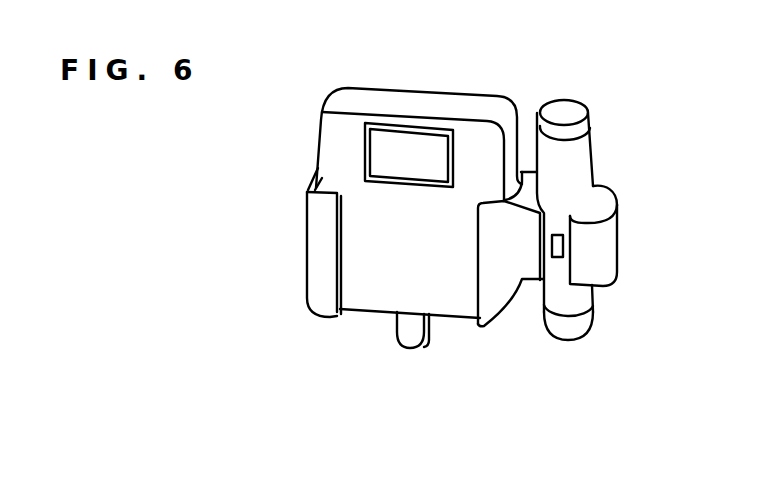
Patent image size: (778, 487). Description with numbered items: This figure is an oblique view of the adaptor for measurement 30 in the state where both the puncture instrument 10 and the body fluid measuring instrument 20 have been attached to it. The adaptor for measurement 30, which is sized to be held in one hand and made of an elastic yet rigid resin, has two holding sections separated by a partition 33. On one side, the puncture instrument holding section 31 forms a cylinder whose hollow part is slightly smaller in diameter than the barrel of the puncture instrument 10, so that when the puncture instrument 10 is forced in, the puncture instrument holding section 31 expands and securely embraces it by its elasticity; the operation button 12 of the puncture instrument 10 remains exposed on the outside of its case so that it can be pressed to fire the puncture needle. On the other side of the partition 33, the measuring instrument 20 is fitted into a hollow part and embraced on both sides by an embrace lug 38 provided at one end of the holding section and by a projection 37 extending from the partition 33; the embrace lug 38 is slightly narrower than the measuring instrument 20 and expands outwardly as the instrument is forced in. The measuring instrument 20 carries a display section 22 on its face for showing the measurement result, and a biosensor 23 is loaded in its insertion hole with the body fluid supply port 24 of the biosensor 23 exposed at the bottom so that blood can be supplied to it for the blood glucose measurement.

The puncture instrument 10 is at (567, 115).
The operation button 12 is at (562, 243).
The body fluid measuring instrument 20 is at (354, 97).
The display section 22 is at (433, 147).
The biosensor 23 is at (429, 333).
The body fluid supply port 24 is at (410, 348).
The adaptor for measurement 30 is at (610, 183).
The puncture instrument holding section 31 is at (588, 270).
The partition 33 is at (528, 170).
The projection 37 is at (497, 294).
The embrace lug 38 is at (325, 288).